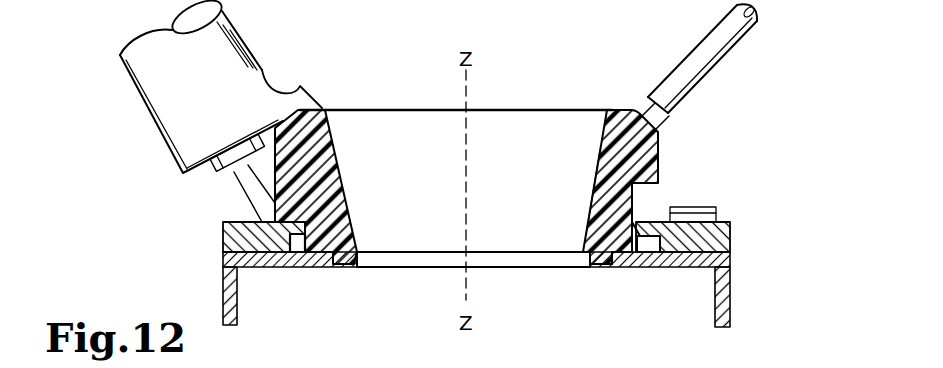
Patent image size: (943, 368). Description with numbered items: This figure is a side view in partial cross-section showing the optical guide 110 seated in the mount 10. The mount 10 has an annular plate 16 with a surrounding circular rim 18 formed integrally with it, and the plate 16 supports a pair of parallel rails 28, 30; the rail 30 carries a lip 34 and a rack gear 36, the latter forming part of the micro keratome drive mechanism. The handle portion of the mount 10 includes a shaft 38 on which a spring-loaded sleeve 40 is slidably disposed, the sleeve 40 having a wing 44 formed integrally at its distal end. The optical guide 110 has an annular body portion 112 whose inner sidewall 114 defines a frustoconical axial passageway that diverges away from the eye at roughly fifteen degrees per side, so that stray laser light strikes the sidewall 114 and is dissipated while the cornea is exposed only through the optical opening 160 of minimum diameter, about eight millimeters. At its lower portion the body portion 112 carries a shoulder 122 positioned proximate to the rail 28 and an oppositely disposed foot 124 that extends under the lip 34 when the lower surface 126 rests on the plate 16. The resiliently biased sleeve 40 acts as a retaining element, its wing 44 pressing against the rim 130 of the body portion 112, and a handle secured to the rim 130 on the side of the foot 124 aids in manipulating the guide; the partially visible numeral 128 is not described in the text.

The mount 10 is at (123, 156).
The annular plate 16 is at (342, 260).
The circular rim 18 is at (224, 292).
The rail 28 is at (225, 236).
The rail 30 is at (730, 226).
The lip 34 is at (642, 233).
The rack gear 36 is at (692, 210).
The shaft 38 is at (216, 178).
The sleeve 40 is at (218, 47).
The wing 44 is at (298, 90).
The optical guide 110 is at (716, 120).
The body portion 112 is at (603, 204).
The inner sidewall 114 is at (333, 152).
The shoulder 122 is at (297, 254).
The foot 124 is at (628, 258).
The lower surface 126 is at (325, 255).
The tube end 128 is at (659, 4).
The rim 130 is at (323, 108).
The optical opening 160 is at (502, 270).